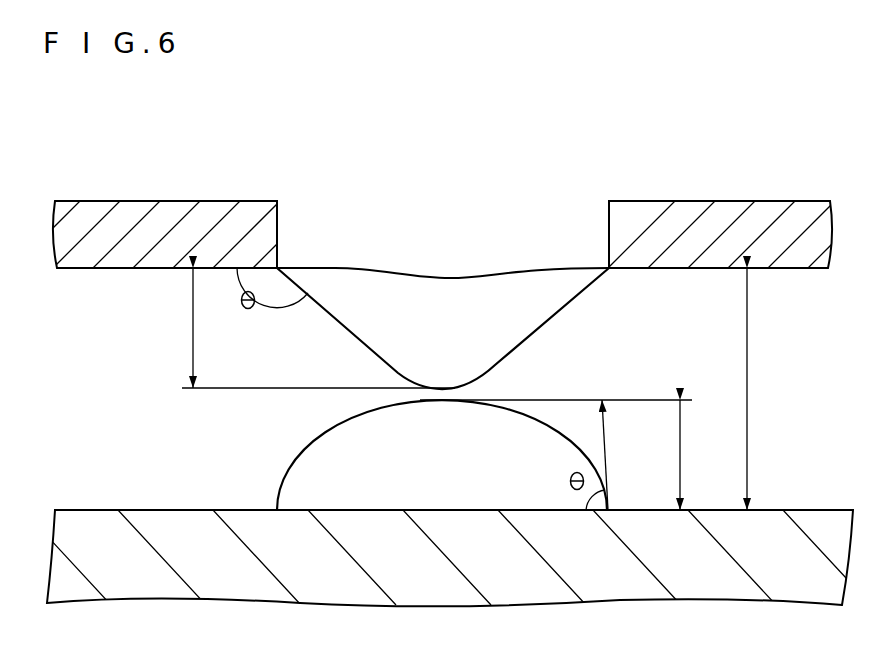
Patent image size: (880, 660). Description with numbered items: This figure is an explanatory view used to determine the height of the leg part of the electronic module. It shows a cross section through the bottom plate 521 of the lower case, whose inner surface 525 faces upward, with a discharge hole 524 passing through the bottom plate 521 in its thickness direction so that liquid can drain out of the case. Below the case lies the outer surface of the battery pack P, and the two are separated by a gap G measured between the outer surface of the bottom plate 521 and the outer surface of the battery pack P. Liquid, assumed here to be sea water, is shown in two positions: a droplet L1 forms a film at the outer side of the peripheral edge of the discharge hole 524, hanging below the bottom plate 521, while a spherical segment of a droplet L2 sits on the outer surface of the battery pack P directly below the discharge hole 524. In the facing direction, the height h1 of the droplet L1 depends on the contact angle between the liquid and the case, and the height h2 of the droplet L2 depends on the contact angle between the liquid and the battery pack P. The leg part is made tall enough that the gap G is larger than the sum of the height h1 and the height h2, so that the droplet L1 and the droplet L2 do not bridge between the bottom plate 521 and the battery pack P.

The inner surface 525 is at (173, 201).
The discharge hole 524 is at (609, 242).
The bottom plate 521 is at (767, 212).
The droplet L1 is at (527, 322).
The droplet L2 is at (305, 475).
The battery pack P is at (93, 527).
The height of the droplet L1 h1 is at (304, 328).
The height of the droplet L2 h2 is at (573, 455).
The gap G is at (760, 389).